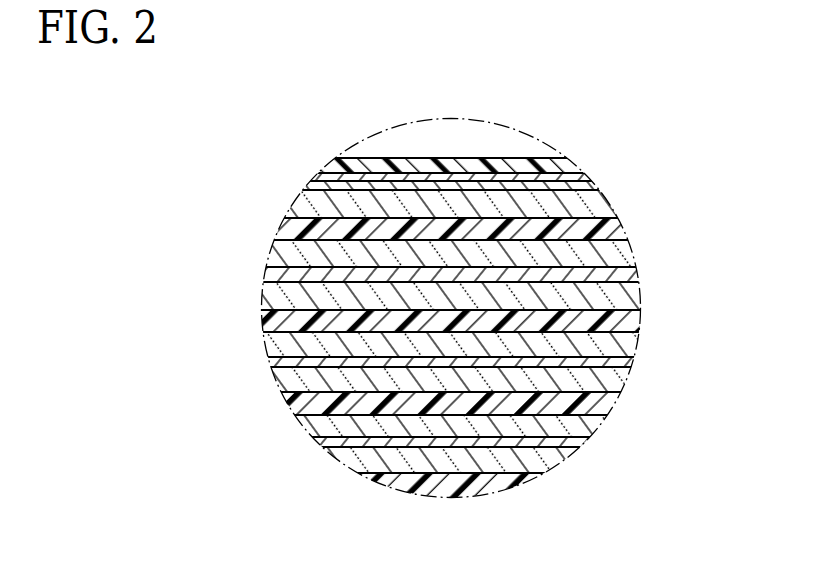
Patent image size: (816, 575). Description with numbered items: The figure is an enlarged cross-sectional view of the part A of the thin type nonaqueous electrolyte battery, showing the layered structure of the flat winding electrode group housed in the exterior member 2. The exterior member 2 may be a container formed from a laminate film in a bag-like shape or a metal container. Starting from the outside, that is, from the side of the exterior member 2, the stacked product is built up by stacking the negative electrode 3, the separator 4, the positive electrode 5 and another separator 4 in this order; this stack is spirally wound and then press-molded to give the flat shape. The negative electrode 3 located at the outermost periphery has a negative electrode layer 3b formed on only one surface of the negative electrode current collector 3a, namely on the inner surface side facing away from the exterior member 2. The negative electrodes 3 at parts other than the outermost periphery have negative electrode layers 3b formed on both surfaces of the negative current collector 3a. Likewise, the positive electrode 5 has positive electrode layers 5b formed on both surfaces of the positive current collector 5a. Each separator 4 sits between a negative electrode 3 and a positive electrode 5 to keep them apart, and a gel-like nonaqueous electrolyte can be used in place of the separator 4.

The part A is at (390, 140).
The exterior member 2 is at (573, 167).
The negative electrode 3 is at (692, 137).
The negative electrode current collector 3a is at (592, 180).
The negative electrode layer 3b is at (593, 205).
The separator 4 is at (297, 232).
The positive electrode 5 is at (715, 215).
The positive current collector 5a is at (627, 275).
The positive electrode layer 5b is at (623, 253).